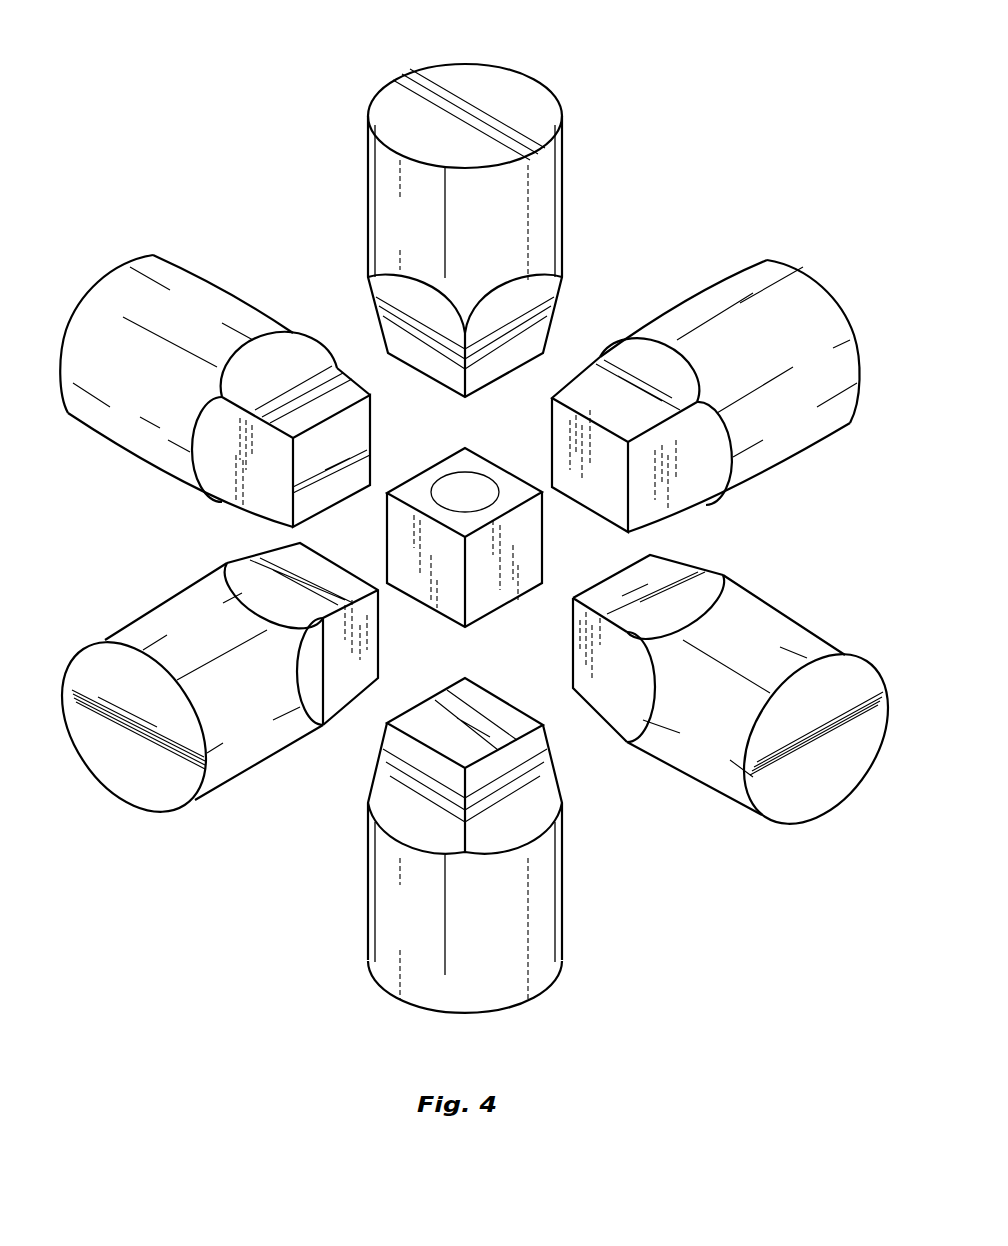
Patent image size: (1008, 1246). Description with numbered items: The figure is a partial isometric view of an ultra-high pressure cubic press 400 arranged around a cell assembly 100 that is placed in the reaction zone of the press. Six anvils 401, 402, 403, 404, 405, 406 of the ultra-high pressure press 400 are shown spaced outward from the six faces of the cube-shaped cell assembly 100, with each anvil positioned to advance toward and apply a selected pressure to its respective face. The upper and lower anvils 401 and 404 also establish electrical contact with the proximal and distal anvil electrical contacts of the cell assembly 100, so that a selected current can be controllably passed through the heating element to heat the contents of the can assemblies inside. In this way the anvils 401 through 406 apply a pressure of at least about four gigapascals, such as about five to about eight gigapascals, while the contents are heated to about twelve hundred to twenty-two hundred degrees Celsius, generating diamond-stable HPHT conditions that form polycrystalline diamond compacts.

The ultra-high pressure cubic press 400 is at (740, 100).
The cell assembly 100 is at (486, 445).
The anvil 401 is at (543, 213).
The anvil 402 is at (790, 432).
The anvil 403 is at (767, 628).
The anvil 404 is at (540, 882).
The anvil 405 is at (240, 750).
The anvil 406 is at (150, 440).